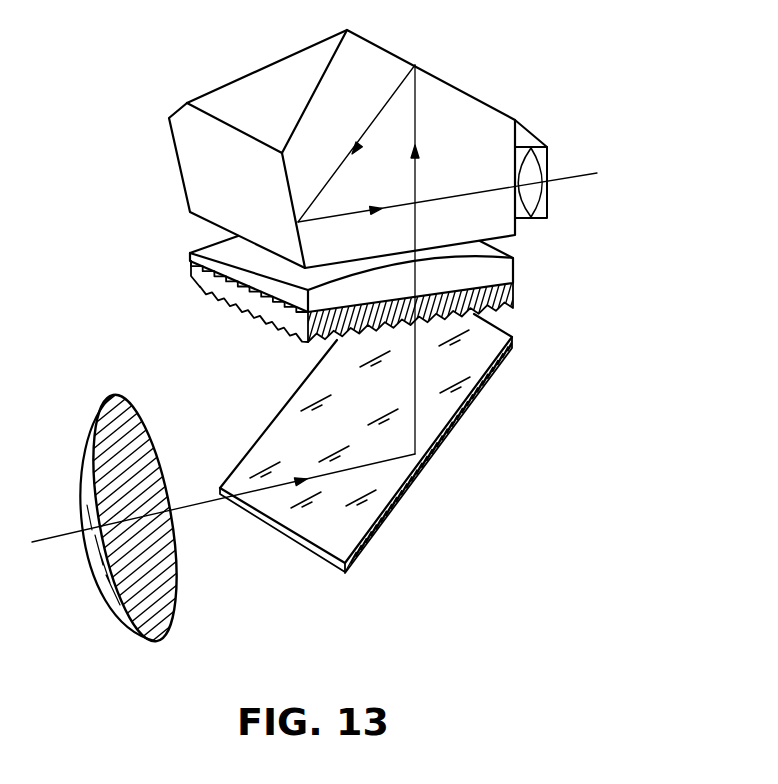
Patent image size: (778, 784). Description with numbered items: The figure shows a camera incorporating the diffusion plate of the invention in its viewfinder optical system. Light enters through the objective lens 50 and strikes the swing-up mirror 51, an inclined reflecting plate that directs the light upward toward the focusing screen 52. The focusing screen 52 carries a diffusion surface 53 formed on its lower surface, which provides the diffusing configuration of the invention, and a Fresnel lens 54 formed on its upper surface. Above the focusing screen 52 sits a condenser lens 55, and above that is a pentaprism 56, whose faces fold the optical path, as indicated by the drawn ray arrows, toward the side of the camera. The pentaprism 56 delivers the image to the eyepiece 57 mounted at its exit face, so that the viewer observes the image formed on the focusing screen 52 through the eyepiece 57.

The objective lens 50 is at (88, 430).
The swing-up mirror 51 is at (308, 527).
The focusing screen 52 is at (518, 298).
The diffusion surface 53 is at (218, 302).
The Fresnel lens 54 is at (200, 288).
The condenser lens 55 is at (516, 270).
The pentaprism 56 is at (463, 90).
The eyepiece 57 is at (547, 155).